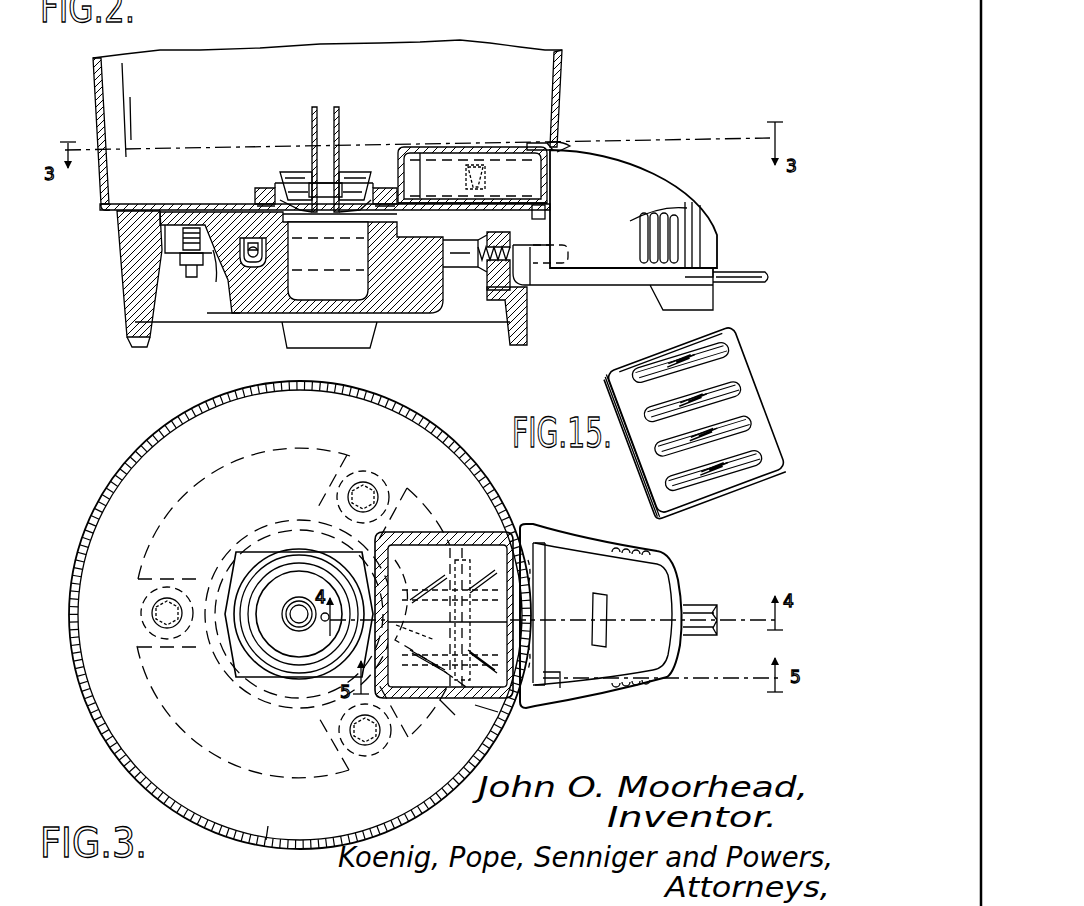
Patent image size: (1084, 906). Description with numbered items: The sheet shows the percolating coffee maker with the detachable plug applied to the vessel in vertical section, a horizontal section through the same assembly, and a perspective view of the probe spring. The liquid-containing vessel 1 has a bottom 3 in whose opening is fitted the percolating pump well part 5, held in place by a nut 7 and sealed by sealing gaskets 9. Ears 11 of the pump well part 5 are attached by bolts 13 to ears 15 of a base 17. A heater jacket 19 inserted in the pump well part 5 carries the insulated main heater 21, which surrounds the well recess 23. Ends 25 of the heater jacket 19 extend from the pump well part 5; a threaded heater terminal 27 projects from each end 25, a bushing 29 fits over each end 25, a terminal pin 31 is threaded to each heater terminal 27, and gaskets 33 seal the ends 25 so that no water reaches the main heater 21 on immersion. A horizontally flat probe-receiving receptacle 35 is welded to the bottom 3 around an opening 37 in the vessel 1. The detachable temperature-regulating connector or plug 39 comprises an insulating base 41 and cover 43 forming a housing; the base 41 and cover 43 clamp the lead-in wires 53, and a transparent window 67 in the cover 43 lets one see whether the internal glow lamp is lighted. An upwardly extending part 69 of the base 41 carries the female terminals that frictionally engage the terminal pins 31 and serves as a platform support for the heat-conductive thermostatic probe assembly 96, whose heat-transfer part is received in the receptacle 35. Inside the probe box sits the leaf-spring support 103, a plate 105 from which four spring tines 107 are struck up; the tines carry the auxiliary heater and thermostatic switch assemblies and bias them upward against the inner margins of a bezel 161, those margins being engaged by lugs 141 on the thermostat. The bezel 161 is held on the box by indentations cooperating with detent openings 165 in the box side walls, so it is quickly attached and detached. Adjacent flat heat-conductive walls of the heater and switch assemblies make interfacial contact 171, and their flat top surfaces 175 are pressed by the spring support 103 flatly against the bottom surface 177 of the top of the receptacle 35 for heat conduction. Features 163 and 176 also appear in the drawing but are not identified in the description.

In FIG. 2, the liquid-containing vessel 1 is at (562, 73).
In FIG. 3, the liquid-containing vessel 1 is at (421, 393).
In FIG. 2, the bottom 3 is at (152, 176).
In FIG. 3, the bottom 3 is at (306, 430).
In FIG. 2, the percolating pump well part 5 is at (425, 302).
In FIG. 3, the percolating pump well part 5 is at (290, 720).
In FIG. 2, the nut 7 is at (270, 188).
In FIG. 3, the nut 7 is at (274, 552).
In FIG. 2, the sealing gaskets 9 is at (258, 205).
In FIG. 3, the sealing gaskets 9 is at (256, 660).
In FIG. 2, the ears 11 is at (172, 237).
In FIG. 3, the ears 11 is at (142, 606).
In FIG. 2, the bolts 13 is at (192, 280).
In FIG. 3, the bolts 13 is at (170, 640).
In FIG. 2, the ears 15 is at (215, 278).
In FIG. 3, the ears 15 is at (200, 580).
In FIG. 2, the base 17 is at (127, 303).
In FIG. 3, the base 17 is at (266, 841).
In FIG. 2, the heater jacket 19 is at (248, 314).
In FIG. 3, the heater jacket 19 is at (255, 521).
In FIG. 2, the insulated main heater 21 is at (267, 252).
In FIG. 2, the well recess 23 is at (340, 295).
In FIG. 2, the jacket ends 25 is at (458, 246).
In FIG. 3, the jacket ends 25 is at (432, 580).
In FIG. 2, the threaded heater terminal 27 is at (505, 248).
In FIG. 3, the threaded heater terminal 27 is at (448, 546).
In FIG. 2, the bushing 29 is at (478, 270).
In FIG. 3, the bushing 29 is at (459, 718).
In FIG. 2, the terminal pin 31 is at (556, 252).
In FIG. 3, the terminal pin 31 is at (535, 573).
In FIG. 2, the gaskets 33 is at (493, 316).
In FIG. 2, the probe-receiving receptacle 35 is at (516, 147).
In FIG. 2, the opening 37 is at (557, 150).
In FIG. 2, the detachable temperature-regulating connector or plug 39 is at (690, 189).
In FIG. 3, the detachable temperature-regulating connector or plug 39 is at (684, 566).
In FIG. 2, the base 41 is at (563, 278).
In FIG. 2, the cover 43 is at (618, 203).
In FIG. 3, the cover 43 is at (652, 596).
In FIG. 2, the lead-in wires 53 is at (759, 270).
In FIG. 3, the lead-in wires 53 is at (702, 634).
In FIG. 3, the transparent window 67 is at (606, 632).
In FIG. 2, the upwardly extending part 69 is at (546, 222).
In FIG. 2, the heat-conductive thermostatic probe assembly 96 is at (415, 178).
In FIG. 3, the heat-conductive thermostatic probe assembly 96 is at (445, 703).
In FIG. 15, the leaf-spring support 103 is at (766, 382).
In FIG. 15, the plate 105 is at (765, 423).
In FIG. 15, the spring tines 107 is at (660, 392).
In FIG. 3, the lugs 141 is at (543, 665).
In FIG. 3, the bezel 161 is at (496, 713).
In FIG. 2, the indicator 163 is at (485, 178).
In FIG. 2, the detent opening 165 is at (465, 178).
In FIG. 3, the heat-conductive interfacial contact 171 is at (470, 624).
In FIG. 2, the flat top surfaces 175 is at (443, 150).
In FIG. 3, the cam follower 176 is at (404, 626).
In FIG. 2, the bottom surface of receptacle top 177 is at (421, 150).